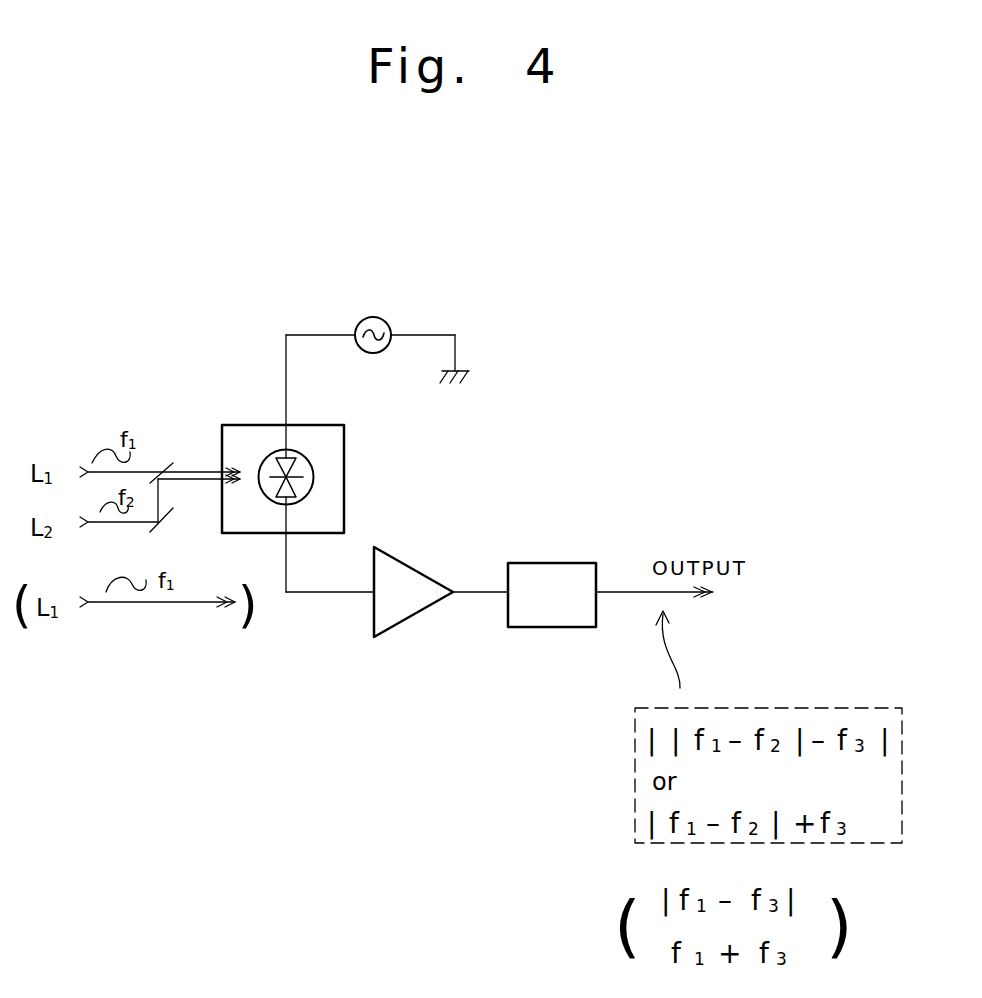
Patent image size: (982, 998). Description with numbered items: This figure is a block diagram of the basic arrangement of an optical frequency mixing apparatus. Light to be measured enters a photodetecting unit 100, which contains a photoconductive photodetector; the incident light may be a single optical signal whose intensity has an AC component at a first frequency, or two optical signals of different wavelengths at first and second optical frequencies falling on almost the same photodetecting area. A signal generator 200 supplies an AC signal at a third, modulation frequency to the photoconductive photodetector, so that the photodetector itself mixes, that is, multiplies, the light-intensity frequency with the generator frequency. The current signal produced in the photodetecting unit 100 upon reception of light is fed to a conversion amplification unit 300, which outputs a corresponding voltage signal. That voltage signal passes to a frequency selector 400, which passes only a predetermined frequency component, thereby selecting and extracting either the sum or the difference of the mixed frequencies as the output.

The photodetecting unit 100 is at (244, 425).
The signal generator 200 is at (389, 322).
The conversion amplification unit 300 is at (419, 573).
The frequency selector 400 is at (578, 563).